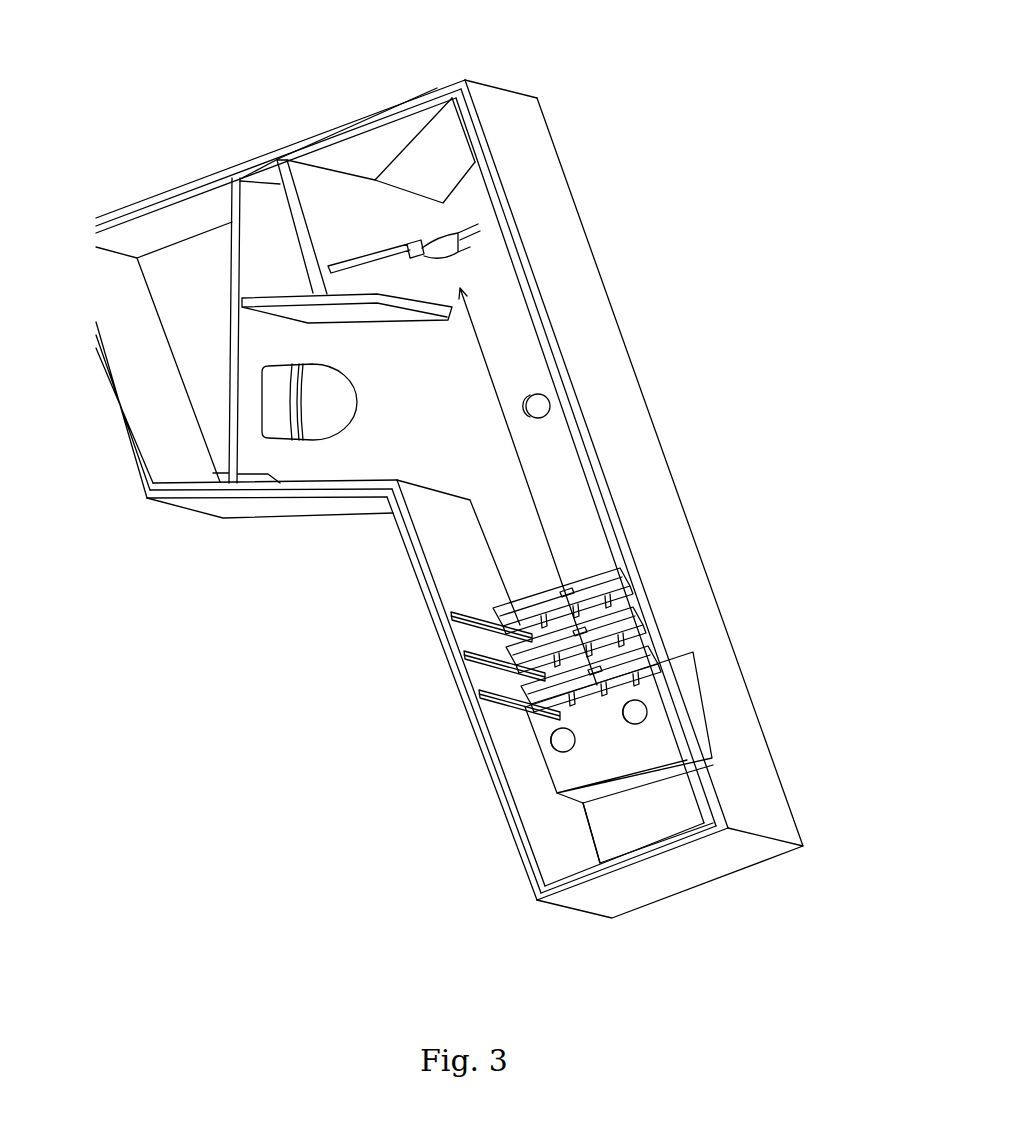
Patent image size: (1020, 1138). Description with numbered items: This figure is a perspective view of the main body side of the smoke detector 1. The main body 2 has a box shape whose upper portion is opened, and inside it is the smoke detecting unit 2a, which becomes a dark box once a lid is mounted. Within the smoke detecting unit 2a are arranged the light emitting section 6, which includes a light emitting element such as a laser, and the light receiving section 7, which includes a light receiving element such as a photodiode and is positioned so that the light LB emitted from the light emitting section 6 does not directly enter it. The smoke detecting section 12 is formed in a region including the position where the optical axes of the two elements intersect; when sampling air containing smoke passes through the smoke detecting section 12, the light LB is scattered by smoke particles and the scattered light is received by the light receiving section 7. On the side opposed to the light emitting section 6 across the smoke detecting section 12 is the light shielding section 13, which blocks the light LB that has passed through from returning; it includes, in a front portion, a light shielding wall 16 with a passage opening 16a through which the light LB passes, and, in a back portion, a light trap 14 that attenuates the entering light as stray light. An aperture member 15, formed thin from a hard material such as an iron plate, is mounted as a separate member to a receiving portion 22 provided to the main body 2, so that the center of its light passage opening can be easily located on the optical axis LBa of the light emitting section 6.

The smoke detector 1 is at (549, 43).
The main body 2 is at (673, 481).
The smoke detecting unit 2a is at (689, 527).
The light emitting section 6 is at (657, 700).
The light receiving section 7 is at (325, 441).
The smoke detecting section 12 is at (562, 398).
The light shielding section 13 is at (448, 207).
The light trap 14 is at (432, 157).
The aperture member 15 is at (605, 577).
The light shielding wall 16 is at (470, 229).
The passage opening 16a is at (460, 246).
The receiving portion 22 is at (482, 637).
The light LB is at (619, 486).
The optical axis of the light emitting section LBa is at (517, 452).